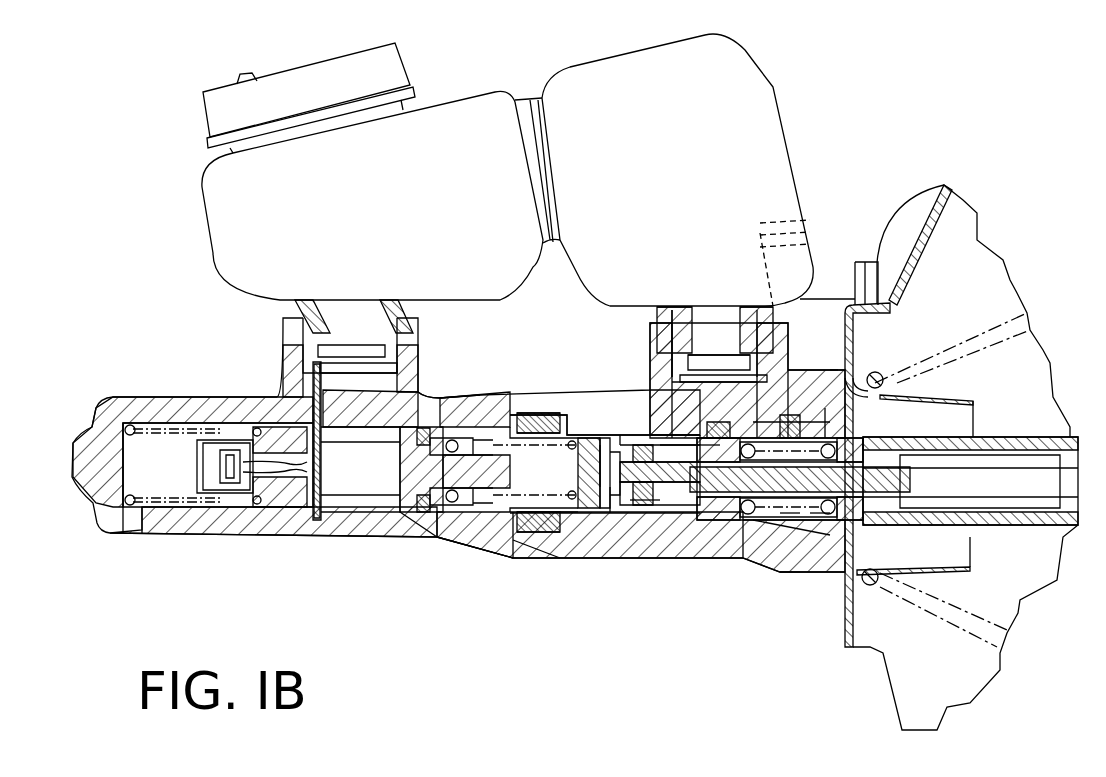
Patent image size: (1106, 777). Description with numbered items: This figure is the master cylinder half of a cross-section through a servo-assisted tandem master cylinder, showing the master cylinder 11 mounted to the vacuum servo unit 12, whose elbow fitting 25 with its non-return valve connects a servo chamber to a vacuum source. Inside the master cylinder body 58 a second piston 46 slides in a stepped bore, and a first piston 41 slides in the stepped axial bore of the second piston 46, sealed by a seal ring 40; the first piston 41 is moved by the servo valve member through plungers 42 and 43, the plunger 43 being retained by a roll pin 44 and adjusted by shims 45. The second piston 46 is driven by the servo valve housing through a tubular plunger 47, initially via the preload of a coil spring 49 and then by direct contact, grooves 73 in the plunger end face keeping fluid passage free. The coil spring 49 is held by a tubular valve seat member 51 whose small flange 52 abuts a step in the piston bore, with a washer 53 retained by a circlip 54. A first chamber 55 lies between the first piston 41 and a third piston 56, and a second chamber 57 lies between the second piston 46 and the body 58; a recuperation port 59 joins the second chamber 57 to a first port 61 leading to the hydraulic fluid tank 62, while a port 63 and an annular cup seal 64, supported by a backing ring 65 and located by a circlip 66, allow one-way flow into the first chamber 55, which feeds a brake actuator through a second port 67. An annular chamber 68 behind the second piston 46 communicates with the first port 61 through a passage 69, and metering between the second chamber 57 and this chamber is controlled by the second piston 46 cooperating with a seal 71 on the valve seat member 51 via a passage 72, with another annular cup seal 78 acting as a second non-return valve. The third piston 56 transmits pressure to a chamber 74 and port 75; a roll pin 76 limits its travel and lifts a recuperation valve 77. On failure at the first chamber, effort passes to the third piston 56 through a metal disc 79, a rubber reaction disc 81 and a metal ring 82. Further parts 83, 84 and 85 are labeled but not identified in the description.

The master cylinder 11 is at (367, 543).
The vacuum servo unit 12 is at (872, 689).
The elbow fitting 25 is at (818, 299).
The seal ring 40 is at (667, 513).
The first piston 41 is at (613, 550).
The plunger 42 is at (817, 537).
The plunger 43 is at (980, 537).
The roll pin 44 is at (1025, 525).
The shims 45 is at (1013, 447).
The second piston 46 is at (632, 440).
The tubular plunger 47 is at (983, 437).
The coil spring 49 is at (788, 560).
The tubular valve seat member 51 is at (677, 513).
The small flange 52 is at (690, 520).
The washer 53 is at (840, 392).
The circlip 54 is at (892, 360).
The first chamber 55 is at (535, 469).
The third piston 56 is at (400, 477).
The second chamber 57 is at (575, 420).
The master cylinder body 58 is at (467, 538).
The recuperation port 59 is at (700, 312).
The first port 61 is at (742, 312).
The tank of hydraulic fluid 62 is at (655, 134).
The port 63 is at (495, 400).
The annular cup seal 64 is at (517, 557).
The backing ring 65 is at (540, 547).
The circlip 66 is at (567, 557).
The second port 67 is at (442, 538).
The annular chamber 68 is at (793, 518).
The passage 69 is at (718, 325).
The seal 71 is at (652, 432).
The passage 72 is at (660, 307).
The grooves 73 is at (738, 540).
The chamber 74 is at (163, 457).
The port 75 is at (132, 523).
The roll pin 76 is at (297, 507).
The recuperation valve 77 is at (235, 473).
The annular cup seal 78 is at (717, 513).
The metal disc 79 is at (573, 550).
The rubber reaction disc 81 is at (608, 513).
The metal ring 82 is at (611, 513).
The seal 83 is at (560, 425).
The cup seal 84 is at (590, 436).
The passage 85 is at (640, 540).